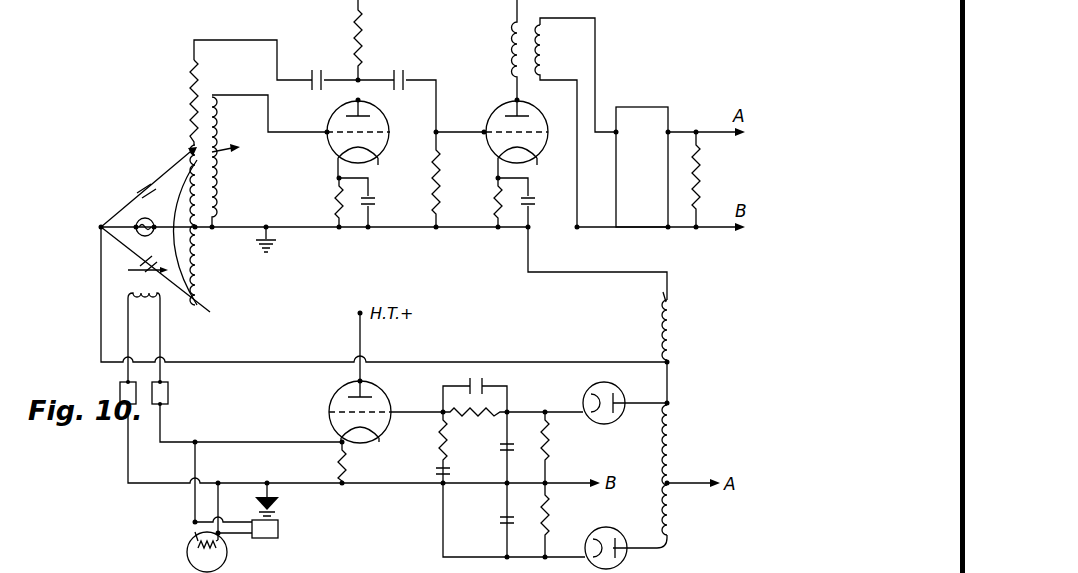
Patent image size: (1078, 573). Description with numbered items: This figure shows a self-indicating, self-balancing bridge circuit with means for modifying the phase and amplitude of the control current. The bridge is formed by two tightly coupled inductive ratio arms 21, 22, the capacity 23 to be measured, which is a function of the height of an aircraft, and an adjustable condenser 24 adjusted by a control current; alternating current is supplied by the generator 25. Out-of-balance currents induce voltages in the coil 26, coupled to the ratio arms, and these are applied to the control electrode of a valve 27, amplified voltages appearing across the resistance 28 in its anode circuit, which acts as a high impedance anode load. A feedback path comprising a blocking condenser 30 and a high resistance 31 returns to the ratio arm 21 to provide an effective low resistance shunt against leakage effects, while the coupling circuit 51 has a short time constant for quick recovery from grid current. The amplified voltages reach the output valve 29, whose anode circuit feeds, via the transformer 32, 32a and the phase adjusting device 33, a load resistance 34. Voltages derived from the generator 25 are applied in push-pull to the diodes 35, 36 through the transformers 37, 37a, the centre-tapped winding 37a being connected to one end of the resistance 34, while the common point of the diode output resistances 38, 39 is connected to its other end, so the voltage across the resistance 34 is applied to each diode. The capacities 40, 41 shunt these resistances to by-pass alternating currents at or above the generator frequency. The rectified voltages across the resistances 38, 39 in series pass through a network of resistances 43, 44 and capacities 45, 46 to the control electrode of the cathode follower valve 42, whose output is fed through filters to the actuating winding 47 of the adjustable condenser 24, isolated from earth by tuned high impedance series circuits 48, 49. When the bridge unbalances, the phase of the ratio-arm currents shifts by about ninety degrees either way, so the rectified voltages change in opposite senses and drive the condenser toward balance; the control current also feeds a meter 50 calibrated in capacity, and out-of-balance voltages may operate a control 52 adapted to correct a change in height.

The inductive ratio arm 21 is at (192, 152).
The inductive ratio arm 22 is at (208, 271).
The capacity to be measured 23 is at (138, 182).
The adjustable condenser 24 is at (155, 269).
The generator 25 is at (136, 219).
The coil 26 is at (216, 208).
The valve 27 is at (386, 152).
The resistance 28 is at (366, 48).
The output valve 29 is at (538, 154).
The blocking condenser 30 is at (316, 68).
The high resistance 31 is at (186, 92).
The transformer 32 is at (505, 58).
The transformer winding 32a is at (546, 62).
The phase adjusting device 33 is at (648, 100).
The load resistance 34 is at (703, 184).
The diode 35 is at (584, 387).
The diode 36 is at (628, 549).
The transformer 37 is at (677, 355).
The transformer winding 37a is at (694, 456).
The output resistance 38 is at (552, 448).
The output resistance 39 is at (549, 518).
The capacity 40 is at (504, 452).
The capacity 41 is at (501, 526).
The cathode follower valve 42 is at (322, 401).
The resistance 43 is at (479, 421).
The resistance 44 is at (437, 443).
The capacity 45 is at (466, 383).
The capacity 46 is at (432, 470).
The actuating winding 47 is at (150, 308).
The high impedance series circuit 48 is at (119, 386).
The high impedance series circuit 49 is at (169, 394).
The meter 50 is at (188, 551).
The coupling circuit 51 is at (406, 72).
The control 52 is at (278, 528).